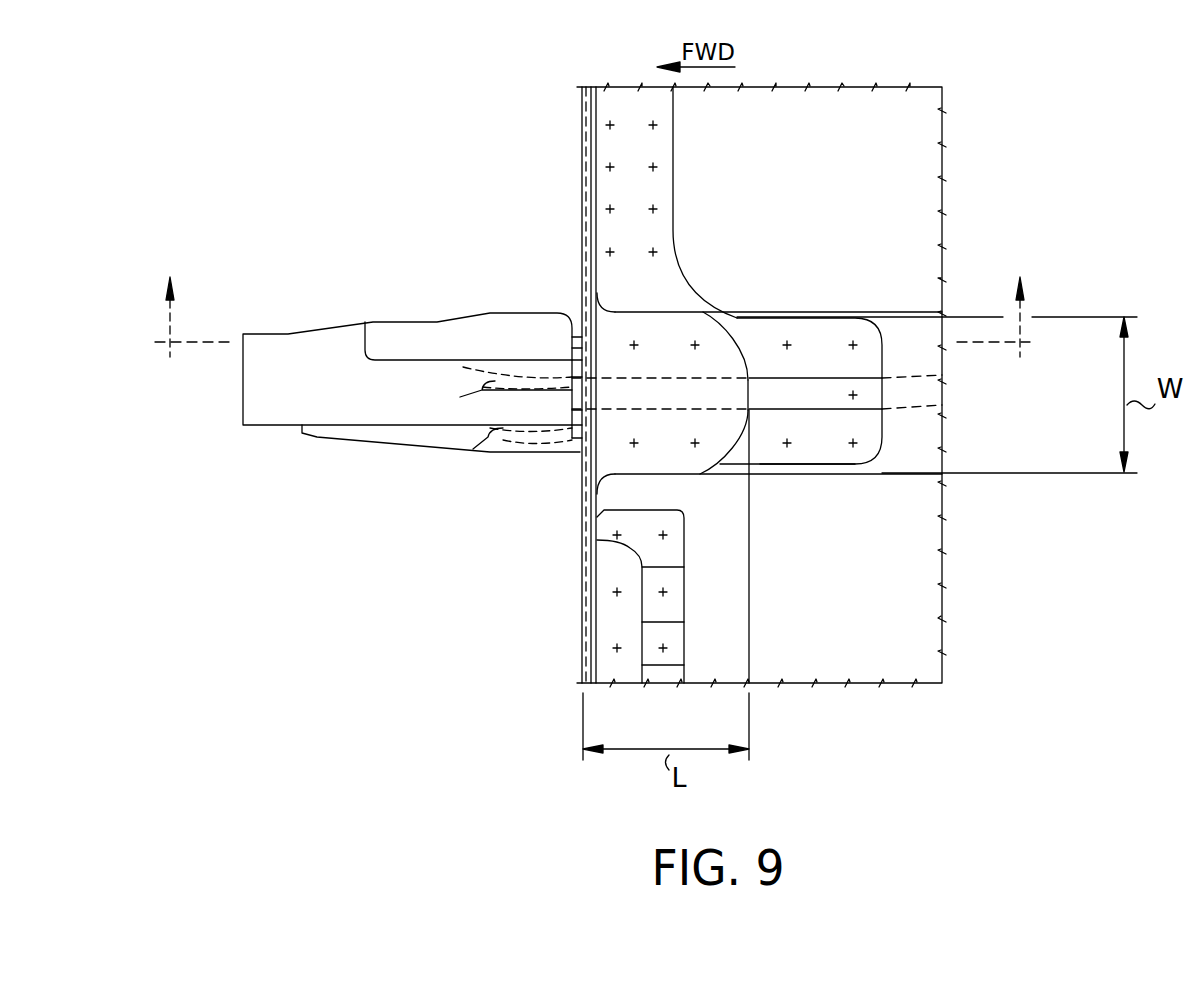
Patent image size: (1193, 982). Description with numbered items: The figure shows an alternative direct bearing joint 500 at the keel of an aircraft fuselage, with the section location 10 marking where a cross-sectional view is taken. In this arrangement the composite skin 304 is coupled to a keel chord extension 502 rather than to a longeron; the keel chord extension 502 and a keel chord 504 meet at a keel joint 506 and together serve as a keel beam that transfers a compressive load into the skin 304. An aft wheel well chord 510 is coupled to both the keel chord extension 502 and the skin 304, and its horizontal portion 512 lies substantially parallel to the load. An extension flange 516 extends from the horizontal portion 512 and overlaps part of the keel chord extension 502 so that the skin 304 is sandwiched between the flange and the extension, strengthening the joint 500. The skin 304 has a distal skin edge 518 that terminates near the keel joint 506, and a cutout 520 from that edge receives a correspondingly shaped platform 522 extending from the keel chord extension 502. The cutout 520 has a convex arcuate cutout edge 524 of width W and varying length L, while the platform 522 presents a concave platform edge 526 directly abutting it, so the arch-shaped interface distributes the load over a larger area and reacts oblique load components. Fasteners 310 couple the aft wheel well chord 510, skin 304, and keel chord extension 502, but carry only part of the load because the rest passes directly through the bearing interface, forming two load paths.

The location 10- 10 is at (596, 313).
The composite skin 304 is at (871, 144).
The fasteners 310 is at (852, 441).
The direct bearing joint 500 is at (708, 498).
The keel chord extension 502 is at (905, 452).
The keel chord 504 is at (397, 458).
The keel joint 506 is at (563, 469).
The aft wheel well chord 510 is at (691, 174).
The horizontal portion 512 is at (658, 143).
The extension flange 516 is at (806, 466).
The distal skin edge 518 is at (562, 588).
The cutout 520 is at (736, 297).
The platform 522 is at (638, 372).
The arcuate cutout edge 524 is at (741, 345).
The concave platform edge 526 is at (727, 450).